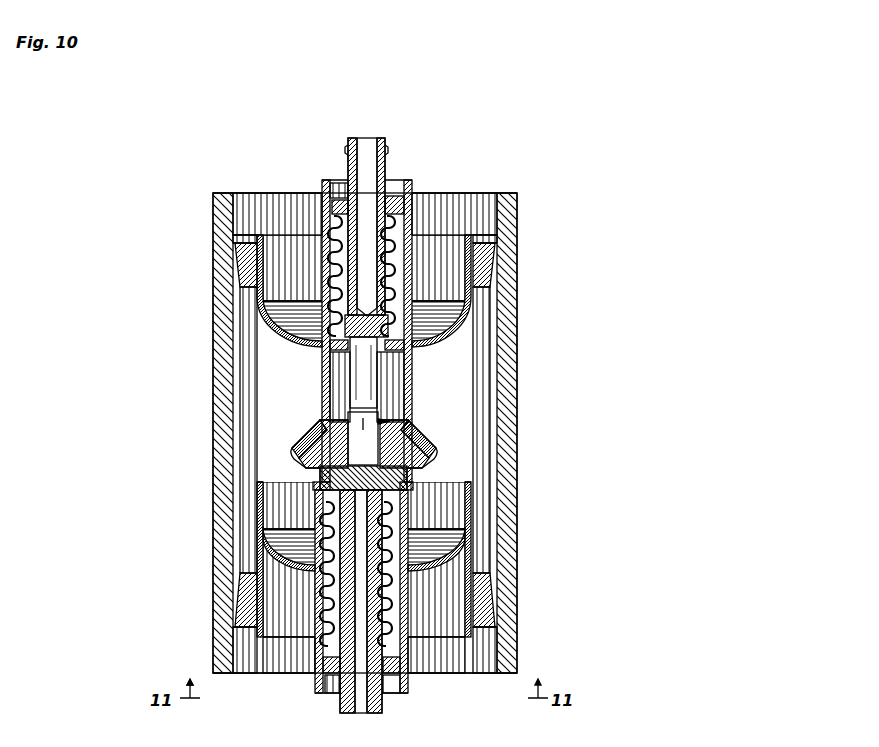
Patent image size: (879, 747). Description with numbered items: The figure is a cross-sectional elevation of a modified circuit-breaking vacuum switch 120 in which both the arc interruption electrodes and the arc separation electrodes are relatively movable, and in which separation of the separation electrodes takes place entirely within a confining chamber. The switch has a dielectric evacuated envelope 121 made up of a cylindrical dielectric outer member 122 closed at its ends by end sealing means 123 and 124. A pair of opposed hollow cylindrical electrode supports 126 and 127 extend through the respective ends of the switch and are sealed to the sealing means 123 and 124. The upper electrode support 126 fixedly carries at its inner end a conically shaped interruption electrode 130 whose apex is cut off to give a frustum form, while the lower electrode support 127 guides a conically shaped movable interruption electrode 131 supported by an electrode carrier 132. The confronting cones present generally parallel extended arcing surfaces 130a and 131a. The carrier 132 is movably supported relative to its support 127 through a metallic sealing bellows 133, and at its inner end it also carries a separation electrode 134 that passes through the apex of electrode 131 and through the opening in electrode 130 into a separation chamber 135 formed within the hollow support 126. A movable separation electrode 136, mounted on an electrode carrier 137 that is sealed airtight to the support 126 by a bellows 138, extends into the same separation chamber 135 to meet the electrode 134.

The vacuum switch 120 is at (321, 121).
The dielectric evacuated envelope 121 is at (518, 380).
The cylindrical dielectric outer member 122 is at (505, 418).
The end sealing means 123 is at (493, 264).
The end sealing means 124 is at (477, 602).
The electrode support 126 is at (418, 210).
The electrode support 127 is at (407, 694).
The interruption electrode 130 is at (365, 443).
The arcing surface 130a is at (313, 433).
The movable interruption electrode 131 is at (431, 472).
The arcing surface 131a is at (296, 454).
The electrode carrier 132 is at (339, 702).
The metallic sealing bellows 133 is at (404, 596).
The separation electrode 134 is at (376, 422).
The separation chamber 135 is at (326, 378).
The movable separation electrode 136 is at (372, 378).
The electrode carrier 137 is at (388, 152).
The bellows 138 is at (396, 270).